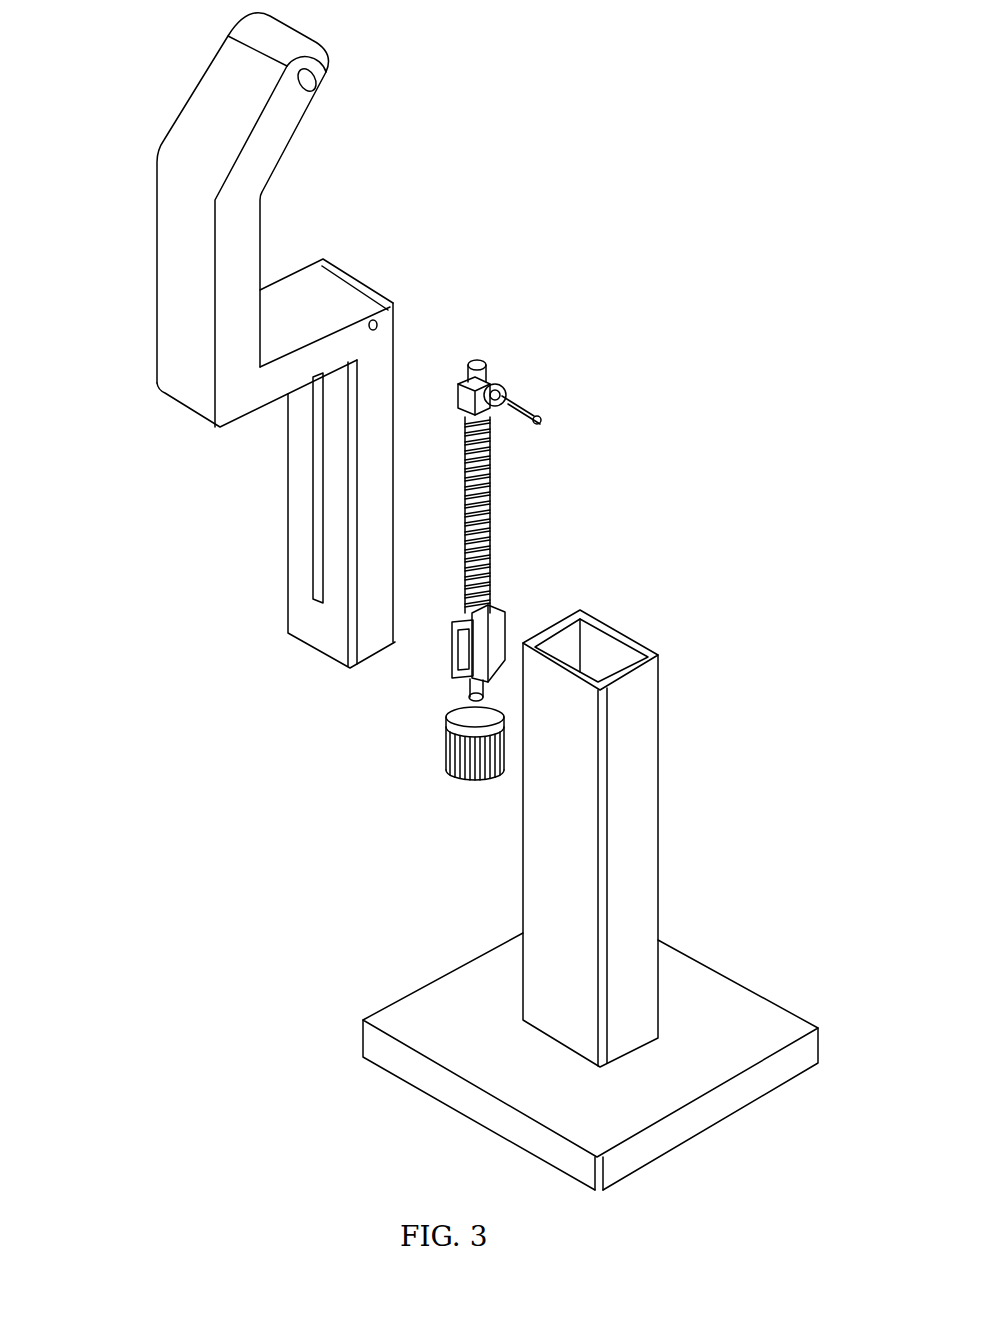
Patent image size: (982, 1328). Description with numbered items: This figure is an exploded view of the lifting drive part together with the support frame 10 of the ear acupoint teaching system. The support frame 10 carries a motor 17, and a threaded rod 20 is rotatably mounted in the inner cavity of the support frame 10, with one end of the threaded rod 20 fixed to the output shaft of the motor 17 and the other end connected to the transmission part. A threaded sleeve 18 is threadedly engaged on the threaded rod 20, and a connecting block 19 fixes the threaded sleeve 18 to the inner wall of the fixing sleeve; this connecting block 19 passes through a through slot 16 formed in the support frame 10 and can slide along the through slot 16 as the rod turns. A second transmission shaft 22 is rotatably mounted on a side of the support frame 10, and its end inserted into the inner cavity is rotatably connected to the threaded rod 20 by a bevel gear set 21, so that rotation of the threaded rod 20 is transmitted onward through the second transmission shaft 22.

The support frame 10 is at (152, 272).
The through slot 16 is at (317, 506).
The motor 17 is at (450, 767).
The threaded sleeve 18 is at (500, 643).
The connecting block 19 is at (487, 600).
The threaded rod 20 is at (500, 508).
The bevel gear set 21 is at (497, 383).
The second transmission shaft 22 is at (537, 417).